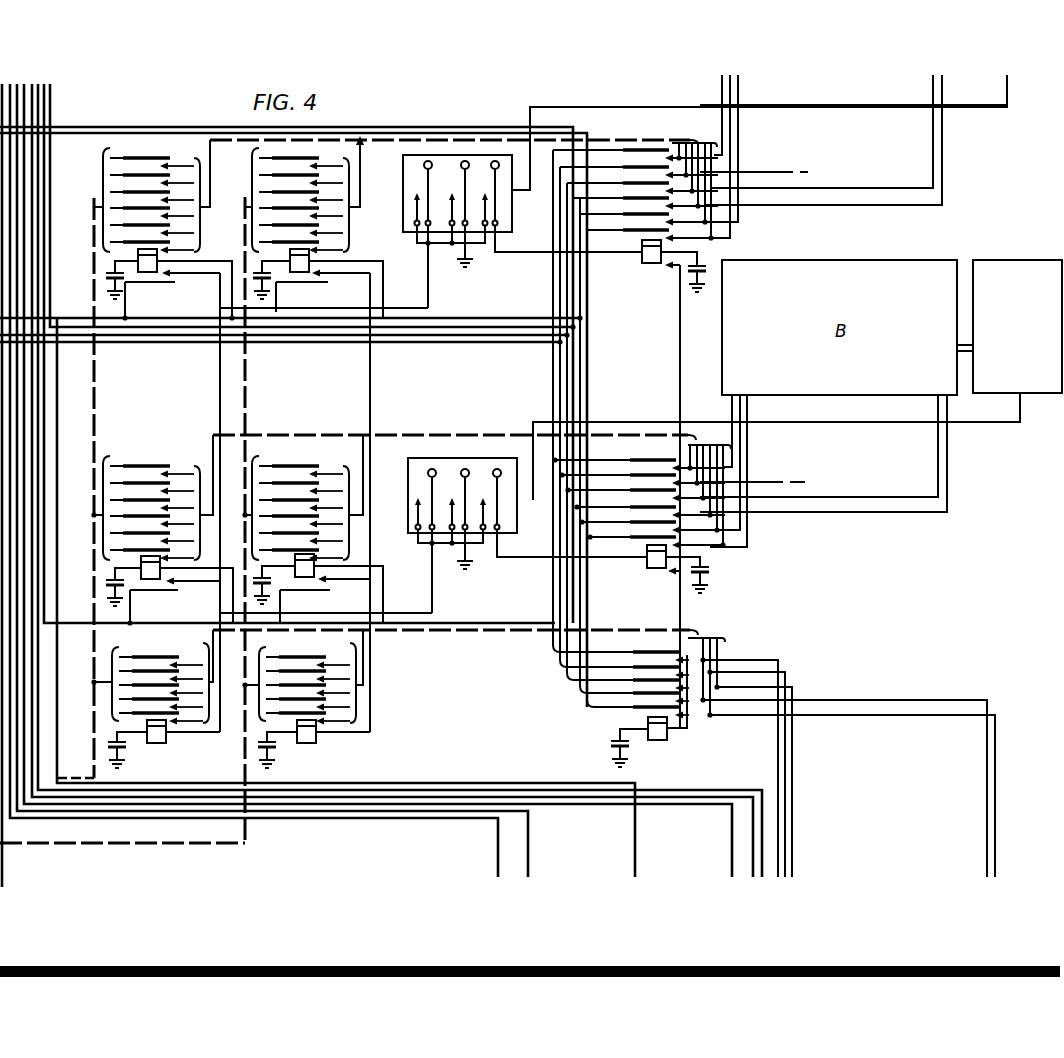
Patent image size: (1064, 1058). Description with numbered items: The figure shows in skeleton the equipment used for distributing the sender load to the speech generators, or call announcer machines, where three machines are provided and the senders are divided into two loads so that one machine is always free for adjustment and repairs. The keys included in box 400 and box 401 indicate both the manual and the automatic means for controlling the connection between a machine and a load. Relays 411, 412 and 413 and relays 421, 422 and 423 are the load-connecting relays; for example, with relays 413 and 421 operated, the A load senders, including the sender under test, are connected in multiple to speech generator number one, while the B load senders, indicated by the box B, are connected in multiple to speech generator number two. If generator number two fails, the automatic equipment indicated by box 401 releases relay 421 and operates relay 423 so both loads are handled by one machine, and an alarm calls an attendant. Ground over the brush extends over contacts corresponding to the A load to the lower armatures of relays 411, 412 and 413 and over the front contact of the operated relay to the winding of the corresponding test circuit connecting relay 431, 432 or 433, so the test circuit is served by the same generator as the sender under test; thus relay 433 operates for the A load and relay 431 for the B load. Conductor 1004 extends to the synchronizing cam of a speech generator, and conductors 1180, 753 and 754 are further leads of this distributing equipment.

The box 400 is at (403, 218).
The box 401 is at (470, 458).
The relay 411 is at (147, 272).
The relay 412 is at (299, 272).
The relay 413 is at (650, 263).
The relay 421 is at (150, 579).
The relay 422 is at (304, 577).
The relay 423 is at (655, 568).
The test circuit connecting relay 431 is at (156, 744).
The test circuit connecting relay 432 is at (306, 744).
The test circuit connecting relay 433 is at (657, 741).
The conductor 1004 is at (726, 117).
The conductor 1180 is at (553, 278).
The conductor 753 is at (730, 828).
The conductor 754 is at (633, 830).